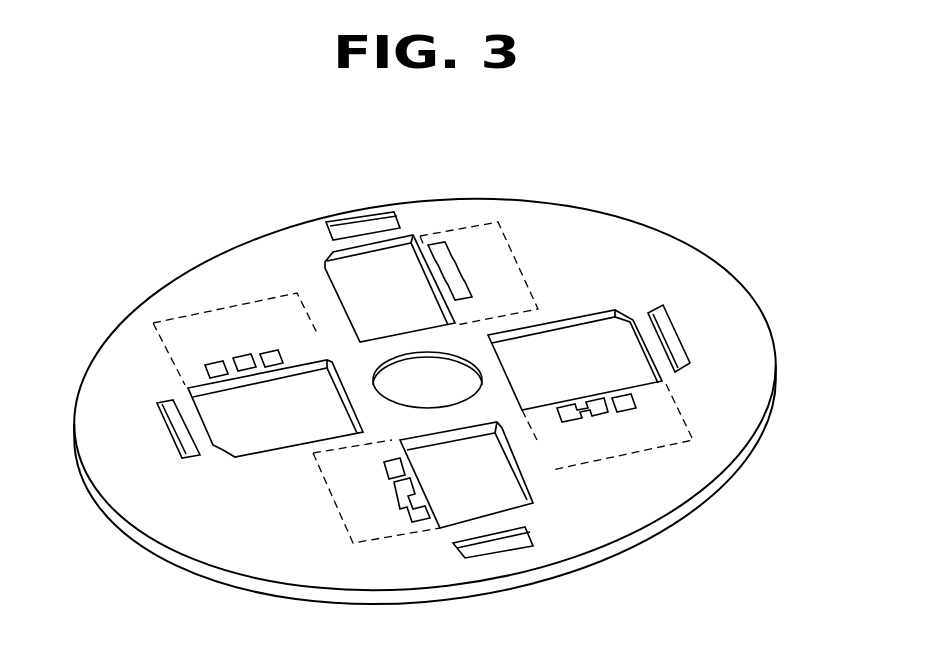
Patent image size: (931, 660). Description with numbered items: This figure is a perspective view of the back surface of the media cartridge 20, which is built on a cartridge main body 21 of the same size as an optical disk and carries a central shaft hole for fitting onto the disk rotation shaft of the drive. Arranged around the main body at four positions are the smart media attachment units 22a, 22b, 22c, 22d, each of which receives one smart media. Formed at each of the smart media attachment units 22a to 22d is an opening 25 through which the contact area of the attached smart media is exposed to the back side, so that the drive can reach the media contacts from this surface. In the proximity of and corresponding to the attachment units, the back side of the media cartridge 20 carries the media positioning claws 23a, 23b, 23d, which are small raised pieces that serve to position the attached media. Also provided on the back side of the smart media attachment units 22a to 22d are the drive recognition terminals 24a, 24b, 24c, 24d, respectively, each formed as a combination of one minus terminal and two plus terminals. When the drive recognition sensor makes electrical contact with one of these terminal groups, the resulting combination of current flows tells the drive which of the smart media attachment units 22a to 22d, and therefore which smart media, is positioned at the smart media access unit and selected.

The media cartridge 20 is at (549, 185).
The cartridge main body 21 is at (755, 372).
The smart media attachment unit 22a is at (170, 357).
The smart media attachment unit 22b is at (402, 537).
The smart media attachment unit 22c is at (693, 425).
The smart media attachment unit 22d is at (448, 228).
The media positioning claw 23a is at (178, 430).
The media positioning claw 23b is at (508, 542).
The media positioning claw 23d is at (342, 223).
The drive recognition terminal 24a is at (242, 355).
The drive recognition terminal 24b is at (400, 492).
The drive recognition terminal 24c is at (577, 420).
The drive recognition terminal 24d is at (457, 243).
The opening 25 is at (353, 310).